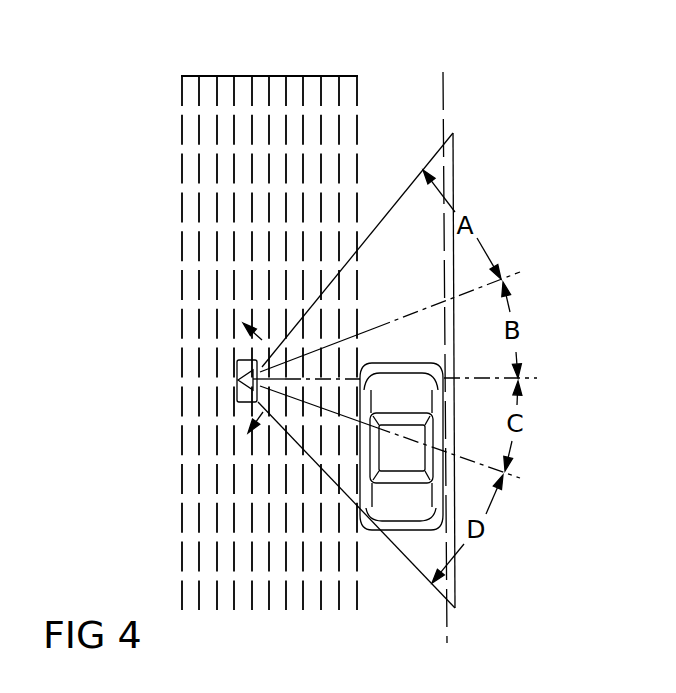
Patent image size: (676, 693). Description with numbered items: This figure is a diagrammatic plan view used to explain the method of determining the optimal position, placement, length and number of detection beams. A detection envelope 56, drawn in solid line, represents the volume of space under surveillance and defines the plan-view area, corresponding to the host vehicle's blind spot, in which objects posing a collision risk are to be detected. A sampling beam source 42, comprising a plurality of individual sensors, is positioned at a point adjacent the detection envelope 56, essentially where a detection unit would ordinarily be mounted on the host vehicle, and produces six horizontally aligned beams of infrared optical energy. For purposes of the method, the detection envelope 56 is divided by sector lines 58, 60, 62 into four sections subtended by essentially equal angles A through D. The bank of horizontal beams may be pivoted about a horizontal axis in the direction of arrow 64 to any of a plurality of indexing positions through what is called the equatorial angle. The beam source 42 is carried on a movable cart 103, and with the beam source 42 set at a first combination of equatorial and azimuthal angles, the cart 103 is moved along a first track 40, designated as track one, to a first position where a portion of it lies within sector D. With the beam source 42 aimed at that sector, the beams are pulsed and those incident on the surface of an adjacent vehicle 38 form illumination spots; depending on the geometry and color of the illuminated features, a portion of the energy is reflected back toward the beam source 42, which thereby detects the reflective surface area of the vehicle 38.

The adjacent vehicle 38 is at (373, 500).
The first track 40 is at (320, 22).
The sampling beam source 42 is at (238, 363).
The detection envelope 56 is at (453, 176).
The sector line 58 is at (372, 330).
The sector line 60 is at (284, 378).
The sector line 62 is at (307, 402).
The arrow 64 is at (240, 408).
The movable cart 103 is at (237, 382).